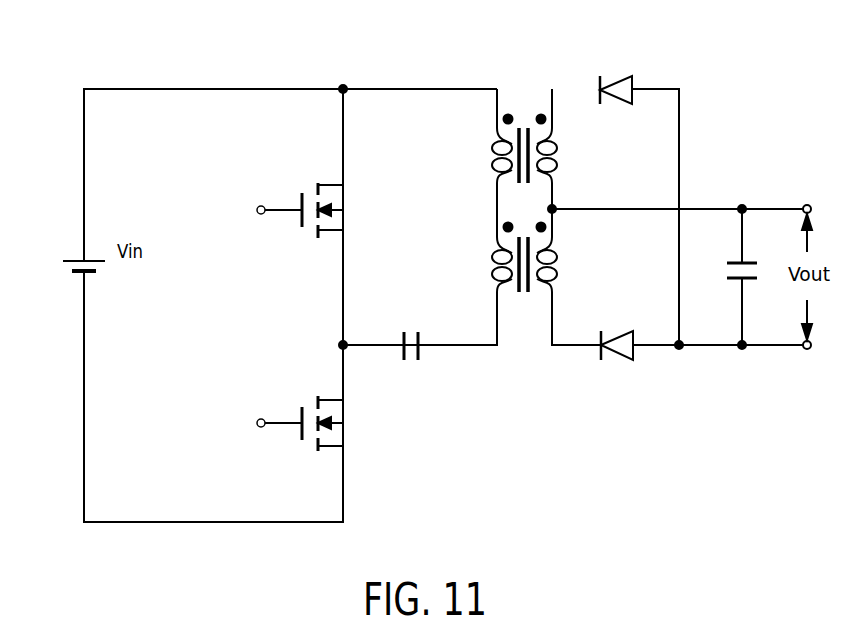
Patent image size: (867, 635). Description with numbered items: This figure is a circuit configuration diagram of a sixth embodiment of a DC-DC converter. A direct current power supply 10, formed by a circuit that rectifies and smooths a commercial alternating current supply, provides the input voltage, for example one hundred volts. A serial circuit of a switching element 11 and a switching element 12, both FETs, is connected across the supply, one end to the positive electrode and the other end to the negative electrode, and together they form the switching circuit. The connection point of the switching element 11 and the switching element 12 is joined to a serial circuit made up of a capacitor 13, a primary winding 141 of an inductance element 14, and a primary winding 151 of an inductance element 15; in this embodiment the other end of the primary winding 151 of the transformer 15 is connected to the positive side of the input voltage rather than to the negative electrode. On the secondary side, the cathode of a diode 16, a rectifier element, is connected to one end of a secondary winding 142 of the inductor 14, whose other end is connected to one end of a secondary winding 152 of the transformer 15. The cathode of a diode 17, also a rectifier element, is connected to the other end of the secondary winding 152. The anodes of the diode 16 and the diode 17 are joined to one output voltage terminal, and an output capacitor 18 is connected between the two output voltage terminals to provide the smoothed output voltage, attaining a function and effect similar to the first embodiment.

The direct current power supply 10 is at (65, 268).
The switching element 11 is at (302, 232).
The switching element 12 is at (302, 446).
The capacitor 13 is at (411, 365).
The inductance element 14 is at (526, 306).
The primary winding 141 is at (492, 264).
The secondary winding 142 is at (560, 264).
The inductance element 15 is at (526, 129).
The primary winding 151 is at (492, 157).
The secondary winding 152 is at (560, 156).
The diode 16 is at (616, 75).
The diode 17 is at (618, 362).
The output capacitor 18 is at (756, 270).